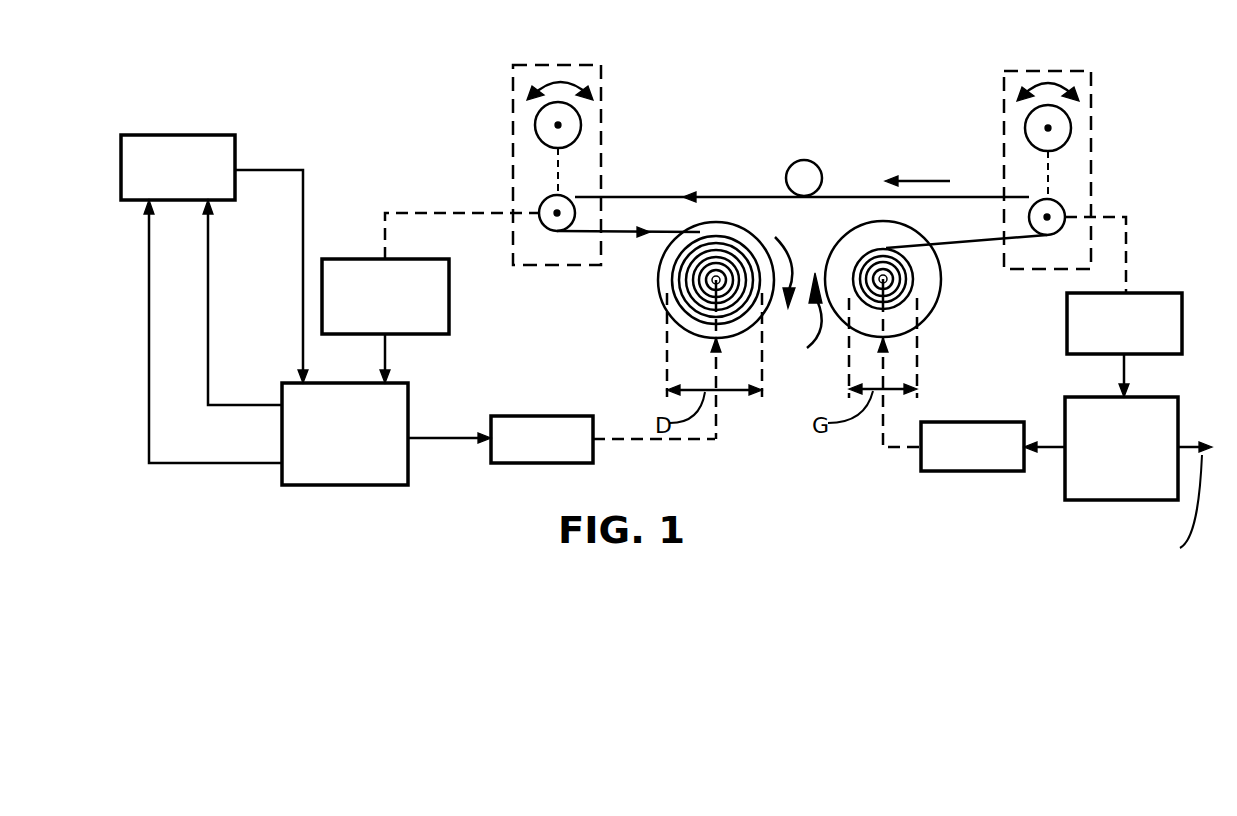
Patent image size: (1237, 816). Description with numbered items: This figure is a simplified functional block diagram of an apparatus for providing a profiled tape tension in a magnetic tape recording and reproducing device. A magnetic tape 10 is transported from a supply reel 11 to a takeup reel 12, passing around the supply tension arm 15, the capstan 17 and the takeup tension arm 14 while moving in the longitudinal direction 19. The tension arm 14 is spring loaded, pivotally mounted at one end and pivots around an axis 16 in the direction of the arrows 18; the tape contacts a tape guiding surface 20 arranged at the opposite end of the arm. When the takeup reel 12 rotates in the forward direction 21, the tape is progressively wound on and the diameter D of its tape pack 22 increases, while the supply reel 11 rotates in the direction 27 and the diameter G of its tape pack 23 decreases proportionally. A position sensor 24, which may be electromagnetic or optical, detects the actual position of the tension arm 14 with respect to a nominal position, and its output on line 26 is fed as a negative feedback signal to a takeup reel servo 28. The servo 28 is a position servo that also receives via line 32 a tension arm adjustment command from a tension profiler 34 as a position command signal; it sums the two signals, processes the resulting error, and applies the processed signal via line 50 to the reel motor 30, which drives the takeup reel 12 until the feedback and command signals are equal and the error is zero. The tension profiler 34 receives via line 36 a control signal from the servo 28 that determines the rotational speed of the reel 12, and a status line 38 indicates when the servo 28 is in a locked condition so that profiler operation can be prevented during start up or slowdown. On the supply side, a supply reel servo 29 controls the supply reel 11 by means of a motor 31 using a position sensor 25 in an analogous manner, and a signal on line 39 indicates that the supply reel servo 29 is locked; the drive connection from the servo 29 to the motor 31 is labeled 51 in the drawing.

The magnetic tape 10 is at (630, 197).
The supply reel 11 is at (910, 237).
The takeup reel 12 is at (738, 232).
The takeup tension arm 14 is at (593, 130).
The supply tension arm 15 is at (1080, 163).
The axis 16 is at (556, 124).
The capstan 17 is at (805, 172).
The arrows 18 is at (545, 90).
The longitudinal direction 19 is at (917, 171).
The tape guiding surface 20 is at (548, 203).
The forward direction 21 is at (790, 266).
The tape pack 22 is at (686, 270).
The tape pack 23 is at (903, 270).
The position sensor 24 is at (352, 268).
The position sensor 25 is at (1140, 290).
The line 26 is at (386, 343).
The direction 27 is at (807, 326).
The takeup reel servo 28 is at (410, 418).
The supply reel servo 29 is at (1090, 400).
The reel motor 30 is at (535, 425).
The motor 31 is at (968, 425).
The line 32 is at (305, 190).
The tension profiler 34 is at (167, 140).
The line 36 is at (150, 292).
The status line 38 is at (210, 292).
The line 39 is at (1191, 442).
The line 50 is at (437, 442).
The supply motor drive line 51 is at (1046, 457).